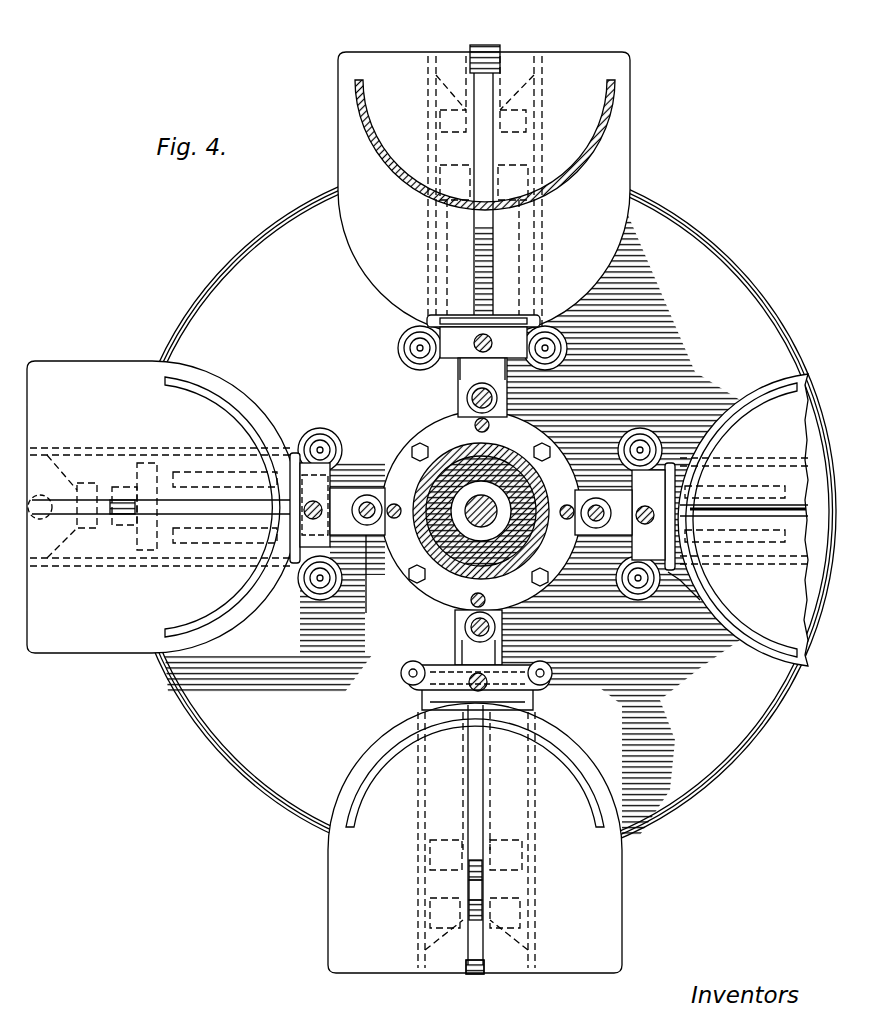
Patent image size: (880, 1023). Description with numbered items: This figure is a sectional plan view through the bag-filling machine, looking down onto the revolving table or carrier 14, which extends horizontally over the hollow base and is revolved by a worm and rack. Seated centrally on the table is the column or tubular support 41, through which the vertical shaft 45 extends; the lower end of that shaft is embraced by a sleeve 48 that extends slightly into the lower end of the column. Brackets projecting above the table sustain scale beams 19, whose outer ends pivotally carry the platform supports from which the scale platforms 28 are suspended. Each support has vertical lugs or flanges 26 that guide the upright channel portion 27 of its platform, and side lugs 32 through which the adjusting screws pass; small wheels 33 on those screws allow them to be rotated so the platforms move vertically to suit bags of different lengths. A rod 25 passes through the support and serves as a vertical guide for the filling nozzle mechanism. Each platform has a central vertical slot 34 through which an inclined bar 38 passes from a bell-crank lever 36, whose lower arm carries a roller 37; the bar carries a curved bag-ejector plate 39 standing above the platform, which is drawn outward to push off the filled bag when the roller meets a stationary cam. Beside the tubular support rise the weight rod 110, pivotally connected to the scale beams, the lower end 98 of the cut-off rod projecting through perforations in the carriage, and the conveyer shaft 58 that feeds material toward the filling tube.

The table or carrier 14 is at (481, 512).
The scale beams 19 is at (343, 493).
The rod 25 is at (472, 678).
The vertical lugs or flanges 26 is at (555, 692).
The upright channel portion 27 is at (422, 702).
The scale platforms 28 is at (417, 512).
The side lugs 32 is at (401, 673).
The small wheels 33 is at (320, 428).
The slots 34 is at (55, 497).
The bell-crank lever 36 is at (472, 897).
The roller 37 is at (473, 966).
The bar 38 is at (490, 140).
The curved bag-ejector plate 39 is at (582, 162).
The column or tubular support 41 is at (470, 490).
The shaft 45 is at (465, 518).
The sleeve 48 is at (478, 495).
The conveyer shaft 58 is at (473, 812).
The lower end 98 is at (490, 427).
The weight rod 110 is at (468, 627).